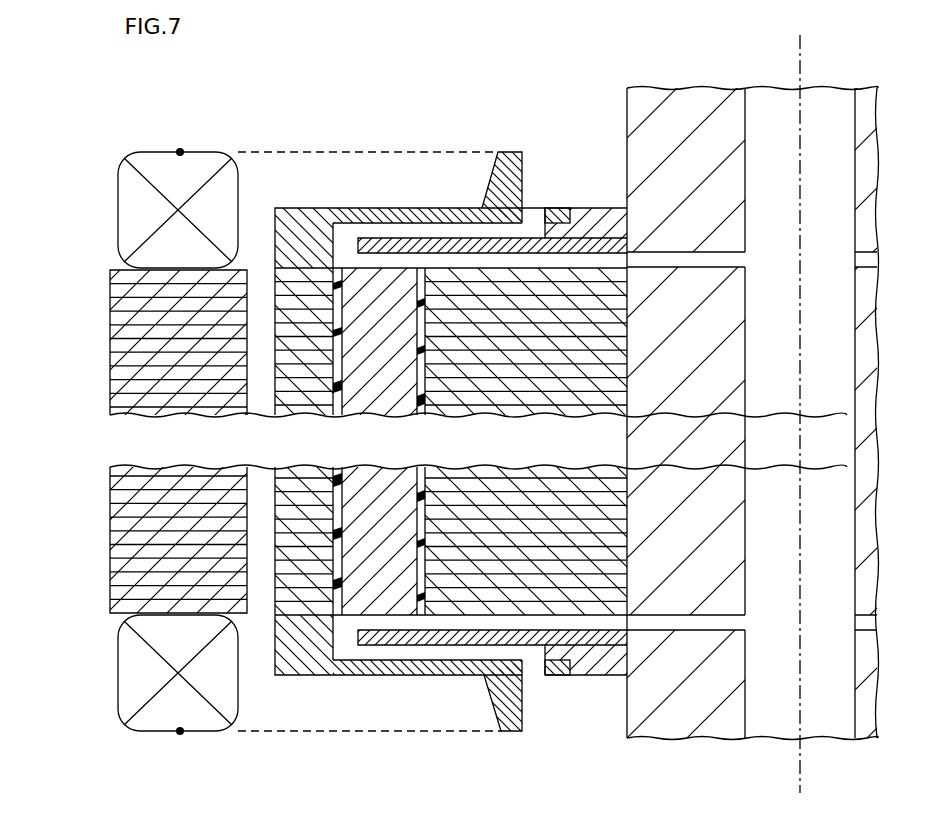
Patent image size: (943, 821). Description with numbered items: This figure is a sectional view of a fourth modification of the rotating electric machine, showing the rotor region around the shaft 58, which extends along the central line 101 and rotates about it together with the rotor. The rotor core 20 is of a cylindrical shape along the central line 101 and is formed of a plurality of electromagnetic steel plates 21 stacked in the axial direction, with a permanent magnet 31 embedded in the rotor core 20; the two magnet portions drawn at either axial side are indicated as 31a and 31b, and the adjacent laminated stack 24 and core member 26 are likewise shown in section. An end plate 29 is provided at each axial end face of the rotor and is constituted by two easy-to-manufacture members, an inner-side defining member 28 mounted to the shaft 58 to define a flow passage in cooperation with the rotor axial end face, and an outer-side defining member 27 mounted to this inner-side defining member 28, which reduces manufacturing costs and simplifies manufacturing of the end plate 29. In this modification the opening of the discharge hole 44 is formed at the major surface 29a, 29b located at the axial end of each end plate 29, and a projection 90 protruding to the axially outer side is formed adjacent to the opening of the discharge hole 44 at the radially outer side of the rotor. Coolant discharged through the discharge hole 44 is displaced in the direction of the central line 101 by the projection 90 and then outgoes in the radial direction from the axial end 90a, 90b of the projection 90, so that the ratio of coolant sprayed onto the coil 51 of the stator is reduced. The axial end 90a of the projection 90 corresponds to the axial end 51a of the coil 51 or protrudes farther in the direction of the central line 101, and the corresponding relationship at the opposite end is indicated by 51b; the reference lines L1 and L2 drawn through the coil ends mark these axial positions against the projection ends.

The rotor core 20 is at (257, 507).
The electromagnetic steel plates 21 is at (595, 315).
The laminated stator core 24 is at (340, 340).
The core member 26 is at (333, 228).
The outer-side defining member 27 is at (413, 243).
The inner-side defining member 28 is at (455, 248).
The end plate 29 is at (492, 398).
The major surface 29a is at (400, 212).
The major surface 29b is at (427, 676).
The permanent magnet 31 is at (378, 425).
The upper magnet portion 31a is at (387, 268).
The lower magnet portion 31b is at (385, 616).
The discharge hole 44 is at (546, 212).
The coil 51 is at (142, 213).
The axial end of coil 51a is at (180, 148).
The lower coil center 51b is at (180, 735).
The shaft 58 is at (684, 100).
The projection 90 is at (495, 425).
The axial end of projection 90a is at (505, 192).
The axial end of projection 90b is at (512, 733).
The central line 101 is at (803, 772).
The upper reference line L1 is at (280, 150).
The lower reference line L2 is at (313, 735).